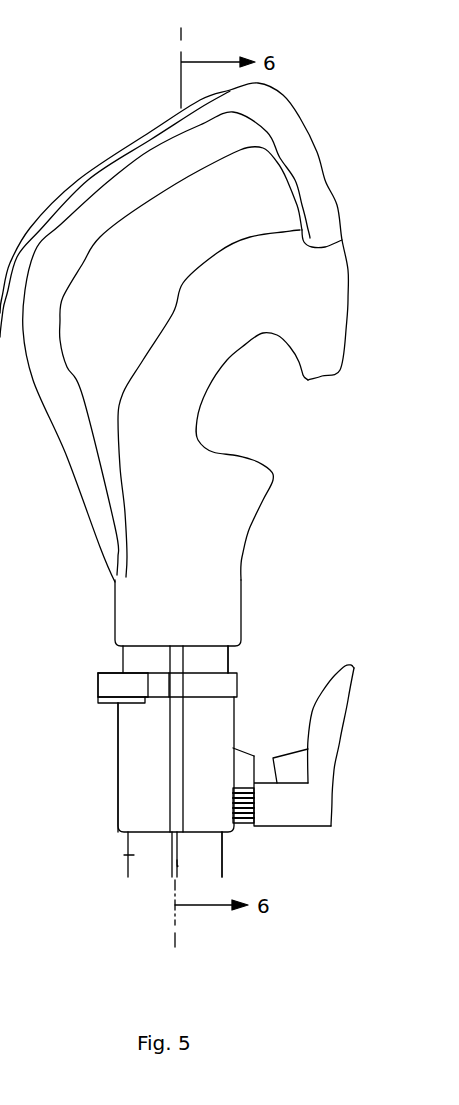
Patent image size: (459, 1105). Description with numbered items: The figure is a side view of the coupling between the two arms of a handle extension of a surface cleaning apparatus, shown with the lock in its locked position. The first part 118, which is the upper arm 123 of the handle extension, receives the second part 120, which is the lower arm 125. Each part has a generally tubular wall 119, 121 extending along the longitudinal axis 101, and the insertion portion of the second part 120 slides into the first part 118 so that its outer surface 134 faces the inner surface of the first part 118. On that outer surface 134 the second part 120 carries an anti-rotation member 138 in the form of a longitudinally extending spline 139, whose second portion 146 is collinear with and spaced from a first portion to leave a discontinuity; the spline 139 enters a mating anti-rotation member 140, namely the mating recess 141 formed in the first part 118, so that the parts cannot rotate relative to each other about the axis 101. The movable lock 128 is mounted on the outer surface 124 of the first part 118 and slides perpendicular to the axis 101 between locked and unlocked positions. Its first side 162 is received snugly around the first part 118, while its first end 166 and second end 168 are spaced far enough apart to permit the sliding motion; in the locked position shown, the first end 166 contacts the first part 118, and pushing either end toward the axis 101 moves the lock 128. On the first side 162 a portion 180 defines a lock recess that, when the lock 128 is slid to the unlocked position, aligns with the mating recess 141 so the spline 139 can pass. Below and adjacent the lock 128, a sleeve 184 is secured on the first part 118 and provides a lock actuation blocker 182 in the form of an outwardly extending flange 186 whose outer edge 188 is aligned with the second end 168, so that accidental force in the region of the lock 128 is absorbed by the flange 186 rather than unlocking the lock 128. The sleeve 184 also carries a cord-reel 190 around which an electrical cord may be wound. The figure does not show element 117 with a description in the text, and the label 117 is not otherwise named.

The longitudinal axis 101 is at (177, 939).
The handle shell / rim 117 is at (280, 118).
The first part 118 is at (308, 621).
The upper arm 123 is at (227, 655).
The wall 119 is at (222, 655).
The outer surface 124 is at (127, 665).
The mating anti-rotation member 140 is at (197, 692).
The mating recess 141 is at (182, 655).
The movable lock 128 is at (201, 690).
The first end 166 is at (223, 680).
The second end 168 is at (100, 692).
The first side 162 is at (147, 688).
The portion 180 is at (157, 680).
The outer edge 188 is at (98, 700).
The sleeve 184 is at (142, 767).
The lock actuation blocker 182 is at (127, 803).
The flange 186 is at (117, 744).
The outer surface 134 is at (137, 855).
The second portion 146 is at (173, 858).
The wall 121 is at (213, 843).
The second part 120 is at (272, 854).
The lower arm 125 is at (213, 865).
The anti-rotation member 138 is at (274, 886).
The spline 139 is at (177, 860).
The cord-reel 190 is at (328, 793).